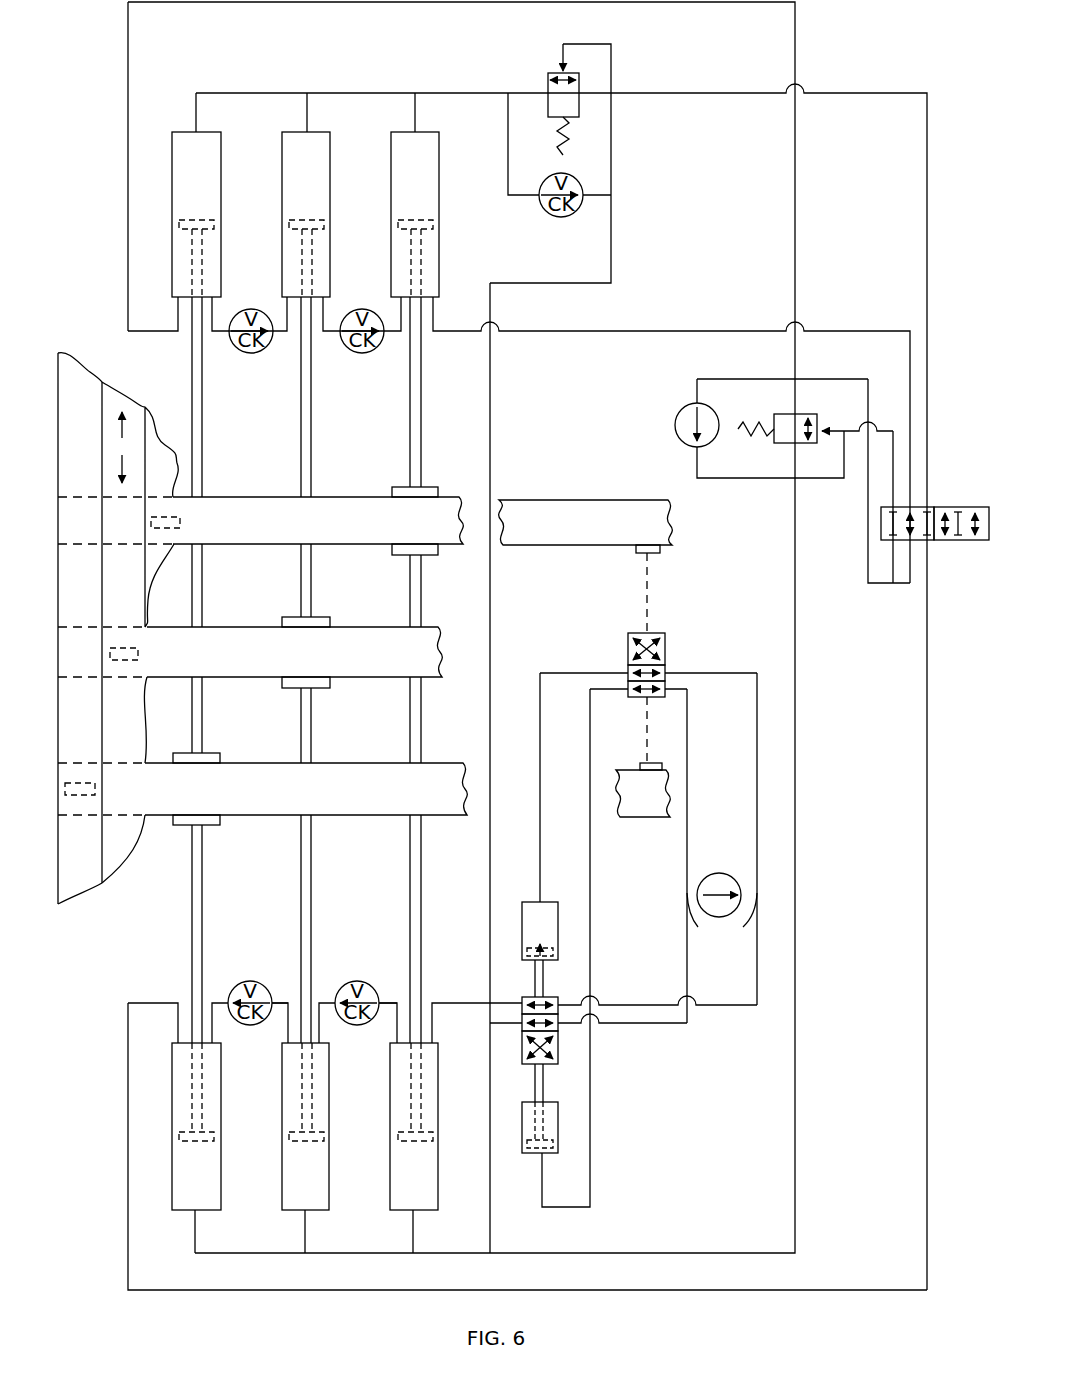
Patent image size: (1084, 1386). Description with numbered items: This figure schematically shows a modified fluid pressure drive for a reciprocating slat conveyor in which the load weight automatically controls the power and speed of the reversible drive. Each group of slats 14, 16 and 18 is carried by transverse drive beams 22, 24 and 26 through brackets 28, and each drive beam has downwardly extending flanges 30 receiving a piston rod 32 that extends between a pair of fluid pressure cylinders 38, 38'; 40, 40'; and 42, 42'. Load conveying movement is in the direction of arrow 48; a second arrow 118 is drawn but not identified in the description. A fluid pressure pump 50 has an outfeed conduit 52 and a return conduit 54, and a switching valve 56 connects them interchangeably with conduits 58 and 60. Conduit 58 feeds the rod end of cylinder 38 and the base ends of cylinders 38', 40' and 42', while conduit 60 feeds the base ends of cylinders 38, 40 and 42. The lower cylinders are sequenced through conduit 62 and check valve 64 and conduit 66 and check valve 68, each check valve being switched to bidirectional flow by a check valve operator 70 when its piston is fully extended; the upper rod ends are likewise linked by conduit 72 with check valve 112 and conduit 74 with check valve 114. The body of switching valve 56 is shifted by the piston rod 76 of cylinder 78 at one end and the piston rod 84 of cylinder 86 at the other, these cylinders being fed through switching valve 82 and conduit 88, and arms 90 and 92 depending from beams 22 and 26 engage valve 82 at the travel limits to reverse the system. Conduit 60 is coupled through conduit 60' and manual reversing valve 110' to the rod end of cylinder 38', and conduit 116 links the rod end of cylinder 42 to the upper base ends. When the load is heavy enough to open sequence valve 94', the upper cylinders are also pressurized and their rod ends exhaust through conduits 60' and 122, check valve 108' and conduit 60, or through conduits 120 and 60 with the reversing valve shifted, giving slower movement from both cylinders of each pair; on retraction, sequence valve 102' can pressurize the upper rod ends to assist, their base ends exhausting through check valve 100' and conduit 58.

The slat 14 is at (155, 440).
The slat 16 is at (83, 358).
The slat 18 is at (118, 395).
The transverse drive beam 22 is at (237, 497).
The transverse drive beam 24 is at (433, 635).
The transverse drive beam 26 is at (380, 808).
The bracket 28 is at (125, 662).
The flange 30 is at (403, 553).
The piston rod 32 is at (298, 570).
The fluid pressure cylinder 38 is at (393, 1126).
The fluid pressure cylinder 38' is at (392, 231).
The fluid pressure cylinder 40 is at (285, 1126).
The fluid pressure cylinder 40' is at (288, 231).
The fluid pressure cylinder 42 is at (178, 1126).
The fluid pressure cylinder 42' is at (178, 231).
The arrow 48 is at (122, 468).
The fluid pressure pump 50 is at (719, 873).
The outfeed conduit 52 is at (741, 922).
The return conduit 54 is at (702, 922).
The switching valve 56 is at (525, 1064).
The conduit 58 is at (352, 93).
The conduit 60 is at (501, 646).
The conduit 60' is at (671, 336).
The conduit 62 is at (378, 988).
The check valve 64 is at (350, 981).
The conduit 66 is at (272, 985).
The check valve 68 is at (245, 981).
The check valve operator 70 is at (210, 277).
The conduit 72 is at (380, 345).
The conduit 74 is at (270, 345).
The piston rod 76 is at (535, 978).
The fluid pressure cylinder 78 is at (522, 905).
The switching valve 82 is at (665, 650).
The piston rod 84 is at (545, 1085).
The fluid pressure cylinder 86 is at (530, 1153).
The conduit 88 is at (590, 1140).
The arm 90 is at (640, 553).
The arm 92 is at (640, 765).
The sequence valve 94' is at (550, 93).
The check valve 100' is at (559, 172).
The sequence valve 102' is at (798, 411).
The check valve 108' is at (738, 428).
The manual reversing valve 110' is at (935, 505).
The check valve 112 is at (358, 353).
The check valve 114 is at (248, 353).
The conduit 116 is at (703, 93).
The upward direction arrow 118 is at (122, 432).
The conduit 120 is at (893, 470).
The conduit 122 is at (868, 548).